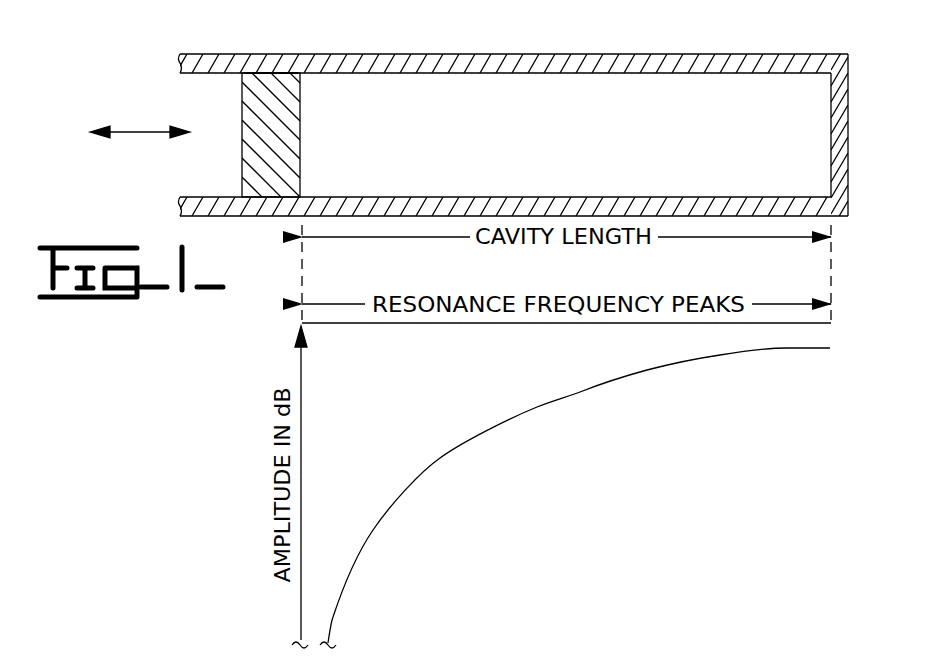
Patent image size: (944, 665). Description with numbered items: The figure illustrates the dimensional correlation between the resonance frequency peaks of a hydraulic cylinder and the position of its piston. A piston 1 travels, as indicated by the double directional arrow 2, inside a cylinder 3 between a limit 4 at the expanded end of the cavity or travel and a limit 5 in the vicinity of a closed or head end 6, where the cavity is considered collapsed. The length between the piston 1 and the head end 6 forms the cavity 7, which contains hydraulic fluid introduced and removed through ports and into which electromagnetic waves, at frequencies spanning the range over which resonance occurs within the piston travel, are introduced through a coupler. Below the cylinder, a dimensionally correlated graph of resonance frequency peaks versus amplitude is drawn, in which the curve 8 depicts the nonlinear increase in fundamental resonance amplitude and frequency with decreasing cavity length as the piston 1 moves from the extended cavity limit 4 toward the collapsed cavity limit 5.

The piston 1 is at (242, 106).
The double directional arrow 2 is at (142, 134).
The cylinder 3 is at (270, 73).
The limit 4 is at (300, 292).
The limit 5 is at (828, 268).
The head end 6 is at (838, 142).
The cavity 7 is at (690, 90).
The curve 8 is at (648, 370).